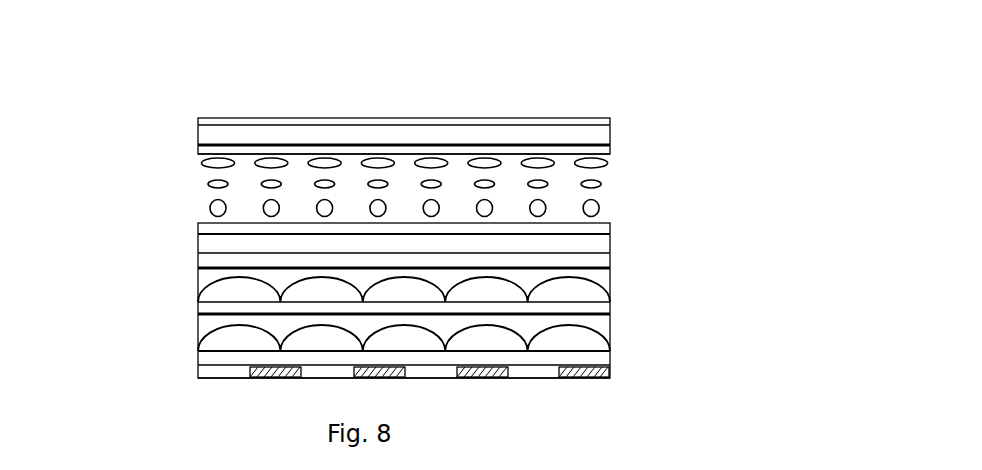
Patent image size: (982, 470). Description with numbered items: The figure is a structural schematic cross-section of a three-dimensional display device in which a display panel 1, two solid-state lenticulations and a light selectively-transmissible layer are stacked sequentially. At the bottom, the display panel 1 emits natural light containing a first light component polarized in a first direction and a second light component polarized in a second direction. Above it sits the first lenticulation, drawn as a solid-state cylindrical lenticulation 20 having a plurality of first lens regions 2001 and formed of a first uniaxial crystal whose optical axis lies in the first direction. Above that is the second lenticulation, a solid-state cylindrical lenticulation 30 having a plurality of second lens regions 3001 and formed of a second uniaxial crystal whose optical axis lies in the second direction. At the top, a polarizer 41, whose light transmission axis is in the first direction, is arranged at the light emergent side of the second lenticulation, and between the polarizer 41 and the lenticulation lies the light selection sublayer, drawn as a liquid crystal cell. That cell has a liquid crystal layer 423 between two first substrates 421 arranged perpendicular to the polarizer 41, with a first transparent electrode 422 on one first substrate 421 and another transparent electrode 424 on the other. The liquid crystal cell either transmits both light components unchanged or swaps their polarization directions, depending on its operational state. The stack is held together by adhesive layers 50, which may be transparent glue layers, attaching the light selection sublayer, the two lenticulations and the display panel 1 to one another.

The display panel 1 is at (610, 374).
The solid-state cylindrical lenticulation 20 is at (610, 336).
The first lens regions 2001 is at (207, 335).
The solid-state cylindrical lenticulation 30 is at (610, 286).
The second lens regions 3001 is at (207, 288).
The adhesive layer 50 is at (205, 259).
The polarizer 41 is at (592, 117).
The first substrates 421 is at (610, 132).
The first transparent electrode 422 is at (610, 150).
The liquid crystal layer 423 is at (208, 185).
The another transparent electrode 424 is at (610, 223).